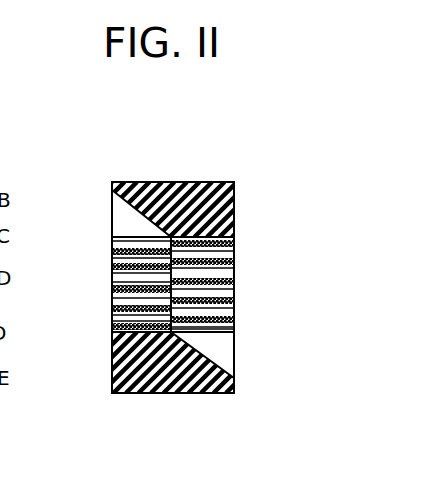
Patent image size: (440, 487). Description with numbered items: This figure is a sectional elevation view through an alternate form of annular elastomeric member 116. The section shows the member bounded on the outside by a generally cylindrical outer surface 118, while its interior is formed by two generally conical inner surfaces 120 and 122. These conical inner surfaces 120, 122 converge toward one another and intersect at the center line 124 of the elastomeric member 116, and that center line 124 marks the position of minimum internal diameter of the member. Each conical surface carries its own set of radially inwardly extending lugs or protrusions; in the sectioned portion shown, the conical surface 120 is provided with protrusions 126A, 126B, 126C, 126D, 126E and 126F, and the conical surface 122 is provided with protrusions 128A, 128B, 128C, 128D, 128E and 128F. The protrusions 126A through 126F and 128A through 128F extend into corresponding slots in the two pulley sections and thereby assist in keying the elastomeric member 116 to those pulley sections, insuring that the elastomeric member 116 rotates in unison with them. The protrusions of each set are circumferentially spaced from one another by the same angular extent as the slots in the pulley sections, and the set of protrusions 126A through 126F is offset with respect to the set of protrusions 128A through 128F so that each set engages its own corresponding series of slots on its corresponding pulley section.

The annular elastomeric member 116 is at (234, 182).
The outer surface 118 is at (175, 178).
The conical inner surface 120 is at (238, 204).
The conical inner surface 122 is at (112, 213).
The center line 124 is at (171, 394).
The protrusion 126A is at (234, 230).
The protrusion 126B is at (234, 249).
The protrusion 126C is at (234, 272).
The protrusion 126D is at (234, 290).
The protrusion 126E is at (234, 313).
The protrusion 126F is at (234, 366).
The protrusion 128A is at (112, 206).
The protrusion 128B is at (112, 262).
The protrusion 128C is at (112, 275).
The protrusion 128D is at (112, 299).
The protrusion 128E is at (112, 319).
The protrusion 128F is at (112, 343).